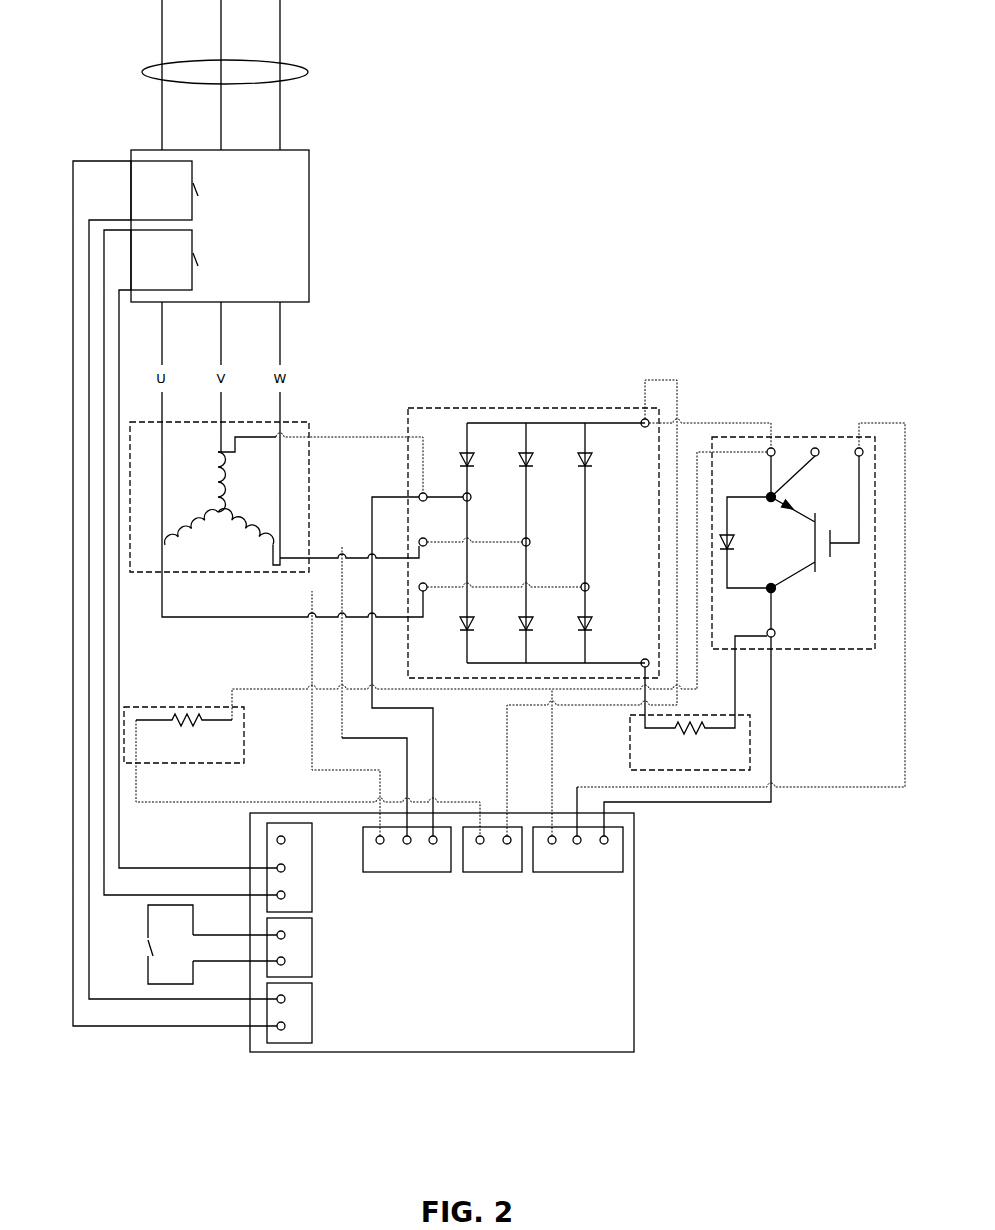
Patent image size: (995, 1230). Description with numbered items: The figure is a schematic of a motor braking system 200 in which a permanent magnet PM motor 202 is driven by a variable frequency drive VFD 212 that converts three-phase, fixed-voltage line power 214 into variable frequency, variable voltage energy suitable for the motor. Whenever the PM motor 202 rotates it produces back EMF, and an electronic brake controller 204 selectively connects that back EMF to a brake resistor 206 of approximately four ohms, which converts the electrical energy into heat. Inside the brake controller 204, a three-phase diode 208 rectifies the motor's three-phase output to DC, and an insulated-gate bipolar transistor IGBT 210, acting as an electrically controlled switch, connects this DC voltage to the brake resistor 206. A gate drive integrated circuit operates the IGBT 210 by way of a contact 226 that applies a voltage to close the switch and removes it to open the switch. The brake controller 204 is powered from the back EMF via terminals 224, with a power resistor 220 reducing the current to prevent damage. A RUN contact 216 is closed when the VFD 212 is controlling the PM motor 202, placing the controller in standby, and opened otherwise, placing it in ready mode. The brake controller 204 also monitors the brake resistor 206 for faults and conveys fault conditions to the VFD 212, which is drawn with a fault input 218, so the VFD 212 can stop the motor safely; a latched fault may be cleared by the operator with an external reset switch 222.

The system 200 is at (588, 166).
The PM motor 202 is at (140, 463).
The brake controller 204 is at (503, 932).
The brake resistor 206 is at (737, 748).
The 3-phase diode 208 is at (436, 418).
The insulated-gate bipolar transistor (IGBT) 210 is at (833, 437).
The variable frequency drive (VFD) 212 is at (283, 178).
The 3-phase fixed voltage line power 214 is at (232, 77).
The RUN contact 216 is at (141, 163).
The fault input 218 is at (170, 277).
The power resistor 220 is at (168, 735).
The external reset switch 222 is at (118, 970).
The terminals 224 is at (497, 893).
The contact 226 is at (590, 858).